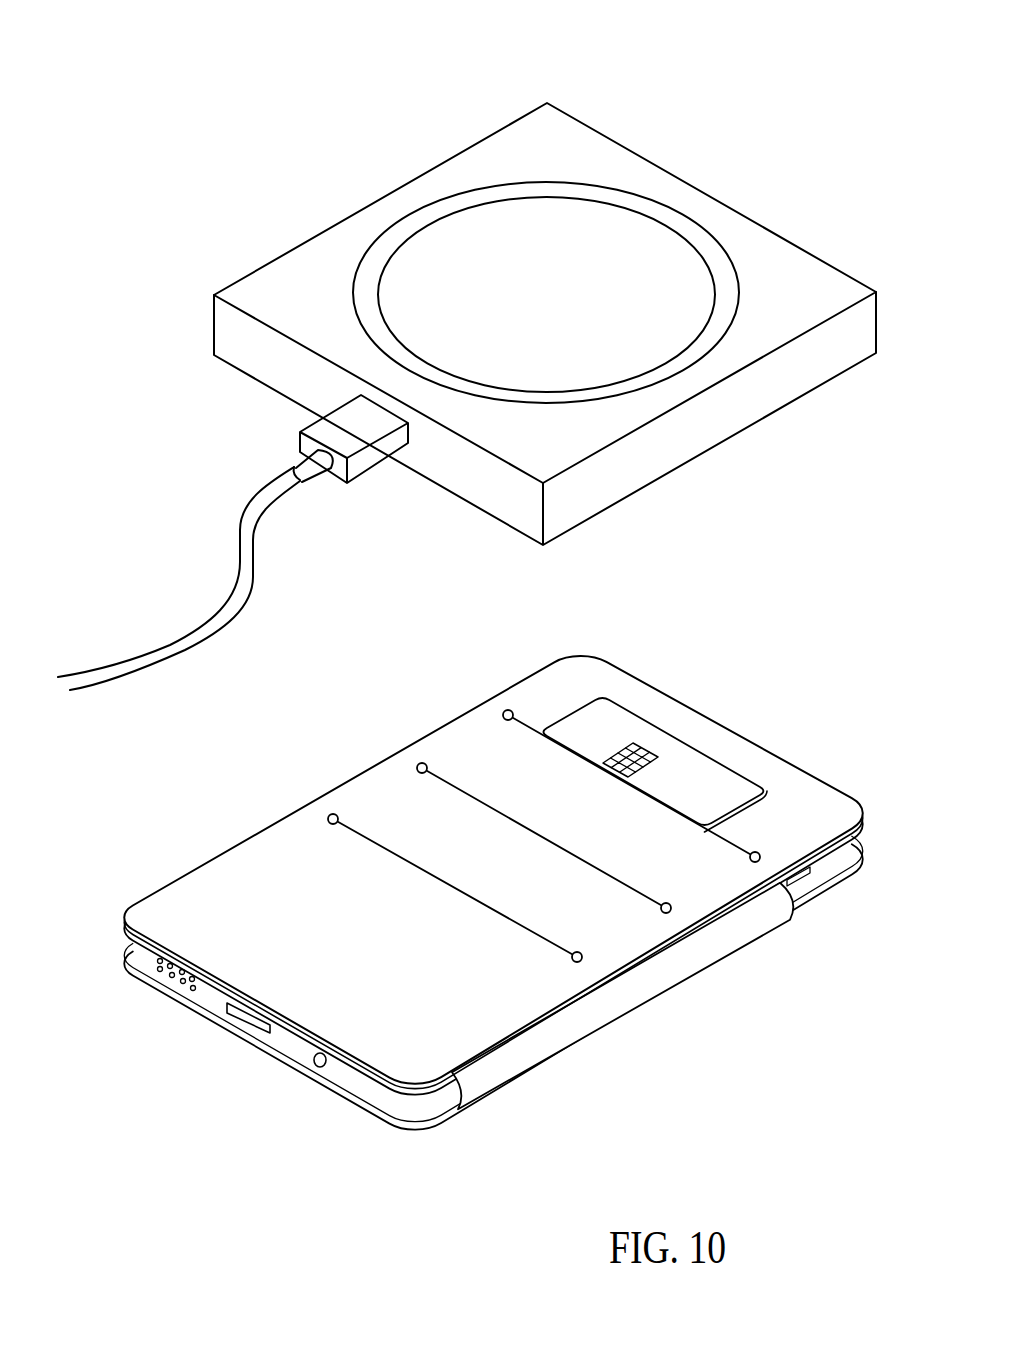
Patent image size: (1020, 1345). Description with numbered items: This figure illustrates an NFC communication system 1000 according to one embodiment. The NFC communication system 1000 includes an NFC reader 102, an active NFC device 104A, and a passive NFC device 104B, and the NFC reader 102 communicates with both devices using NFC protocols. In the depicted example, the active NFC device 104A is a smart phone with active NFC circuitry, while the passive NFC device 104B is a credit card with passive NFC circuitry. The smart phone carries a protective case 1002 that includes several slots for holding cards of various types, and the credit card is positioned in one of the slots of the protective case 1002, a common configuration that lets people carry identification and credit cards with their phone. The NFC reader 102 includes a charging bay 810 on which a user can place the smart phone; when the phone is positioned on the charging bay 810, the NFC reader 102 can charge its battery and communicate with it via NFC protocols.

The NFC communication system 1000 is at (783, 66).
The NFC reader 102 is at (792, 243).
The charging bay 810 is at (557, 306).
The protective case 1002 is at (254, 860).
The active NFC device 104A is at (143, 958).
The passive NFC device 104B is at (700, 742).